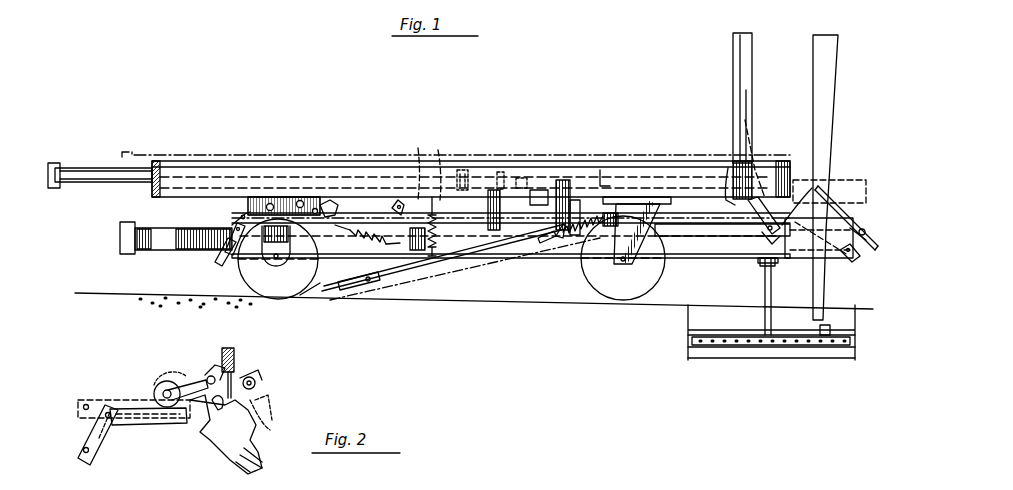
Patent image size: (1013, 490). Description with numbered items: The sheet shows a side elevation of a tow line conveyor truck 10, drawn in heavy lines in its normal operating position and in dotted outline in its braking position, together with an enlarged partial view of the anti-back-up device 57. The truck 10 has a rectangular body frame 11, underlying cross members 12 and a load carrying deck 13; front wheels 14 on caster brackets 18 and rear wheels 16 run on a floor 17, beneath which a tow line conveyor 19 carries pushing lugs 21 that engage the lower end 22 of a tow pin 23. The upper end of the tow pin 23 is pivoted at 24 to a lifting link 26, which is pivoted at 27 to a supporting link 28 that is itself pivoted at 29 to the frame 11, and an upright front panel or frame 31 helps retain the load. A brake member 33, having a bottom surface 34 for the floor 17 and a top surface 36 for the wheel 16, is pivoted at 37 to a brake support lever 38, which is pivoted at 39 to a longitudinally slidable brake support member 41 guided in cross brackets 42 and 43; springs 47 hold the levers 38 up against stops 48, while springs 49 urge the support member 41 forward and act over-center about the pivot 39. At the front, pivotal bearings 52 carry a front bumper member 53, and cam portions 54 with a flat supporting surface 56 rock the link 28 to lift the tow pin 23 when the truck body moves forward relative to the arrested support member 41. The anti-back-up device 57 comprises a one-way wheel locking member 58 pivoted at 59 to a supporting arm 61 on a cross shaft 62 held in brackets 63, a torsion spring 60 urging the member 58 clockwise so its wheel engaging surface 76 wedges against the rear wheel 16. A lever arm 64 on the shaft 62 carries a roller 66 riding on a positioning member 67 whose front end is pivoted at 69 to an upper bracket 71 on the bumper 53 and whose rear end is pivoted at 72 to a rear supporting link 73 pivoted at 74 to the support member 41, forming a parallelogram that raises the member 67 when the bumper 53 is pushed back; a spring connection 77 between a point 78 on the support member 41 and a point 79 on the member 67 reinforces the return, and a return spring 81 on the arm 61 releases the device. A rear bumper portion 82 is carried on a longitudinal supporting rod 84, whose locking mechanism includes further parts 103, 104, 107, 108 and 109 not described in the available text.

In FIG. 1, the tow line conveyor truck 10 is at (589, 107).
In FIG. 1, the body frame 11 is at (593, 172).
In FIG. 1, the cross members 12 is at (668, 168).
In FIG. 1, the load carrying deck 13 is at (617, 166).
In FIG. 1, the front wheels 14 is at (622, 300).
In FIG. 1, the rear wheels 16 is at (278, 298).
In FIG. 2, the rear wheels 16 is at (222, 442).
In FIG. 1, the floor 17 is at (510, 300).
In FIG. 1, the caster brackets 18 is at (630, 168).
In FIG. 1, the tow line conveyor 19 is at (788, 358).
In FIG. 1, the pushing lugs 21 is at (730, 328).
In FIG. 1, the lower end of tow pin 22 is at (754, 324).
In FIG. 1, the tow pin 23 is at (752, 300).
In FIG. 1, the pivotal connection 24 is at (757, 145).
In FIG. 1, the lifting link 26 is at (722, 180).
In FIG. 1, the pivot 27 is at (766, 258).
In FIG. 1, the supporting link 28 is at (770, 225).
In FIG. 1, the pivot 29 is at (762, 200).
In FIG. 1, the front panel or frame 31 is at (733, 77).
In FIG. 1, the brake member 33 is at (340, 292).
In FIG. 1, the bottom surface 34 is at (368, 296).
In FIG. 1, the top surface 36 is at (302, 296).
In FIG. 1, the pivotal connection 37 is at (414, 262).
In FIG. 1, the brake support lever 38 is at (438, 262).
In FIG. 1, the pivot 39 is at (550, 248).
In FIG. 1, the brake support member 41 is at (580, 268).
In FIG. 1, the cross bracket 42 is at (708, 284).
In FIG. 1, the cross bracket 43 is at (258, 270).
In FIG. 1, the springs 47 is at (520, 275).
In FIG. 1, the stops 48 is at (556, 200).
In FIG. 1, the springs 49 is at (574, 200).
In FIG. 1, the pivotal bearings 52 is at (846, 260).
In FIG. 1, the front bumper member 53 is at (862, 254).
In FIG. 1, the cam portions 54 is at (818, 175).
In FIG. 1, the flat supporting surface 56 is at (840, 195).
In FIG. 2, the anti-back-up device 57 is at (116, 372).
In FIG. 2, the one-way wheel locking member 58 is at (272, 412).
In FIG. 2, the pivot 59 is at (270, 388).
In FIG. 2, the torsion spring 60 is at (254, 382).
In FIG. 2, the supporting arm 61 is at (222, 418).
In FIG. 2, the cross shaft 62 is at (205, 378).
In FIG. 2, the brackets 63 is at (205, 364).
In FIG. 2, the lever arm 64 is at (178, 384).
In FIG. 2, the roller 66 is at (134, 380).
In FIG. 1, the positioning member 67 is at (535, 190).
In FIG. 2, the positioning member 67 is at (147, 424).
In FIG. 1, the pivotal connection 69 is at (865, 232).
In FIG. 1, the upper bracket 71 is at (865, 232).
In FIG. 1, the pivot 72 is at (240, 222).
In FIG. 1, the rear supporting link 73 is at (215, 252).
In FIG. 2, the rear supporting link 73 is at (102, 440).
In FIG. 1, the pivot 74 is at (230, 252).
In FIG. 2, the wheel engaging surfaces 76 is at (268, 422).
In FIG. 1, the resilient spring connection 77 is at (365, 228).
In FIG. 1, the point on brake support 78 is at (394, 200).
In FIG. 1, the point on positioning member 79 is at (322, 205).
In FIG. 2, the return spring 81 is at (236, 365).
In FIG. 1, the rear bumper portion 82 is at (45, 165).
In FIG. 1, the supporting rod 84 is at (84, 165).
In FIG. 1, the hydraulic cylinder 103 is at (490, 190).
In FIG. 1, the cylinder 104 is at (456, 169).
In FIG. 1, the line 107 is at (418, 148).
In FIG. 1, the line 108 is at (440, 150).
In FIG. 1, the rod 109 is at (424, 262).